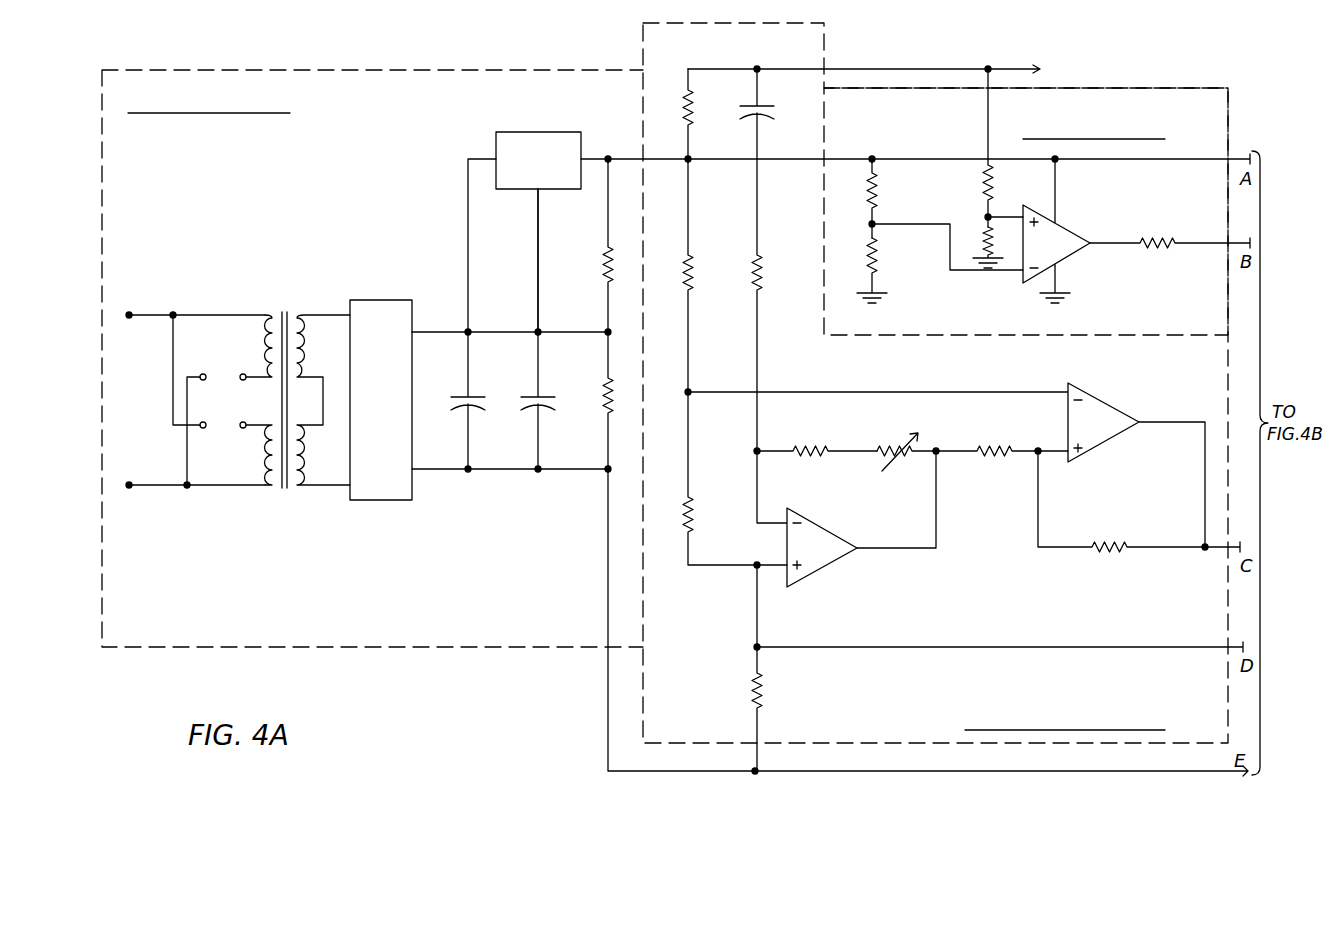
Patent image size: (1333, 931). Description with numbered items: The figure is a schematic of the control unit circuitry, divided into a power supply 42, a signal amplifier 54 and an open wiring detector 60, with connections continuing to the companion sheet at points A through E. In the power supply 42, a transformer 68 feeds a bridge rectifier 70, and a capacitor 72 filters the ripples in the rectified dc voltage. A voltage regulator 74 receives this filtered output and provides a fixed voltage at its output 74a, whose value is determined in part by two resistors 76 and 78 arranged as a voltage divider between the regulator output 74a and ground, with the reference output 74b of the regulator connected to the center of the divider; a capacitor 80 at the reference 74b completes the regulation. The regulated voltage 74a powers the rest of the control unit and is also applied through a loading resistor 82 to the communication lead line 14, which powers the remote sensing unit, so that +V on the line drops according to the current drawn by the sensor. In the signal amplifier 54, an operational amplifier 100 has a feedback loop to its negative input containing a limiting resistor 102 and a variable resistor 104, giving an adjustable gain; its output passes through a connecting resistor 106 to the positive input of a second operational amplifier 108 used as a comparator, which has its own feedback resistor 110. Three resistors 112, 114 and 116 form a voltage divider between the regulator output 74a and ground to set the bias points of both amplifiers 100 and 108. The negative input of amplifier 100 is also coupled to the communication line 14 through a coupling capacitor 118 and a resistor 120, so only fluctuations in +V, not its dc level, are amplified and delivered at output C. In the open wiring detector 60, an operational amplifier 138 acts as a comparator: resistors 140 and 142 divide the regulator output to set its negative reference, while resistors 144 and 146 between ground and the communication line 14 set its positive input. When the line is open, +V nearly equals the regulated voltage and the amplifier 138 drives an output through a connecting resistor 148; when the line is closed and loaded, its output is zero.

The power supply 42 is at (409, 70).
The transformer 68 is at (272, 310).
The bridge rectifier 70 is at (383, 500).
The capacitor 72 is at (460, 392).
The voltage regulator 74 is at (541, 131).
The regulator output 74a is at (602, 158).
The reference output of the regulator 74b is at (538, 219).
The resistor 76 is at (600, 268).
The resistor 78 is at (598, 388).
The capacitor 80 is at (530, 392).
The resistor 82 is at (693, 110).
The communication lead line 14 is at (876, 68).
The coupling capacitor 118 is at (768, 110).
The resistor 112 is at (692, 272).
The resistor 120 is at (762, 274).
The resistor 114 is at (692, 512).
The operational amplifier 100 is at (831, 565).
The limiting resistor 102 is at (824, 456).
The variable resistor 104 is at (892, 442).
The connecting resistor 106 is at (1001, 461).
The second operational amplifier 108 is at (1110, 406).
The resistor 110 is at (1110, 555).
The resistor 116 is at (765, 688).
The signal amplifier 54 is at (1228, 692).
The open wiring detector 60 is at (1231, 126).
The resistor 140 is at (876, 196).
The resistor 142 is at (876, 256).
The resistor 144 is at (994, 180).
The resistor 146 is at (983, 236).
The operational amplifier 138 is at (1076, 235).
The connecting resistor 148 is at (1157, 255).